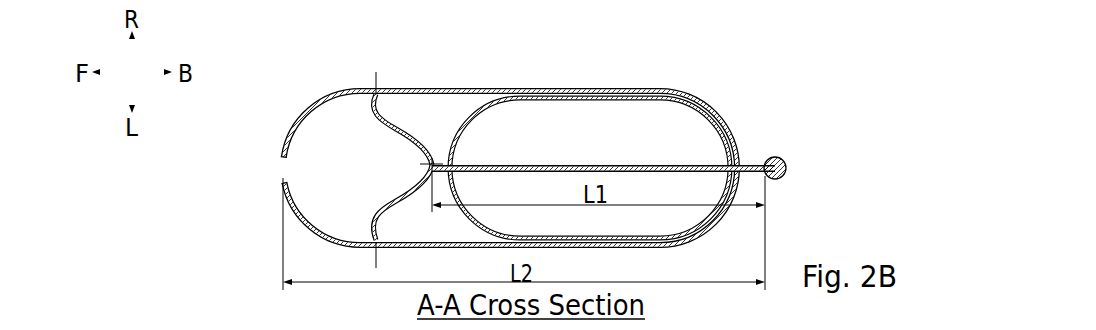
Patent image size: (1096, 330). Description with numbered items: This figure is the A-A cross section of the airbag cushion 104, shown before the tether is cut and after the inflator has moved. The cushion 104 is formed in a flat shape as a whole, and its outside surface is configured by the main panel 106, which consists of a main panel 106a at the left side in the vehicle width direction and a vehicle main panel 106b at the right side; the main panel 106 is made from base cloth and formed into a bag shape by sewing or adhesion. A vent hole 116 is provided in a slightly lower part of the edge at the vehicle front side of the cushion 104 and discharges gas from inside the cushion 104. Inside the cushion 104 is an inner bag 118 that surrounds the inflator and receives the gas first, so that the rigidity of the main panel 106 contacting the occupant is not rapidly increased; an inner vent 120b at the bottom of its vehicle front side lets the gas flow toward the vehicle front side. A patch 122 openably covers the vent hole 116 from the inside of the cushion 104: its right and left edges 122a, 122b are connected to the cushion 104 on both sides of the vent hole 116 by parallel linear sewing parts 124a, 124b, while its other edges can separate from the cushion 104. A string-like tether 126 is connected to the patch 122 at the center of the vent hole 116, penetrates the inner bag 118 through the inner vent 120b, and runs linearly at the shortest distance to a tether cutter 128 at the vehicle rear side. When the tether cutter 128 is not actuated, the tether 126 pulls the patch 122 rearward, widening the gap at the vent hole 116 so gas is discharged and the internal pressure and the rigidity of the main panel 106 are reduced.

The cushion 104 is at (287, 86).
The main panel 106 is at (821, 30).
The main panel 106a is at (753, 163).
The vehicle main panel 106b is at (705, 102).
The vent hole 116 is at (283, 183).
The inner bag 118 is at (505, 86).
The inner vent 120b is at (463, 157).
The patch 122 is at (402, 132).
The edge of the patch 122a is at (385, 245).
The edge of the patch 122b is at (400, 88).
The sewing part 124a is at (375, 261).
The sewing part 124b is at (376, 78).
The tether 126 is at (589, 165).
The tether cutter 128 is at (787, 167).